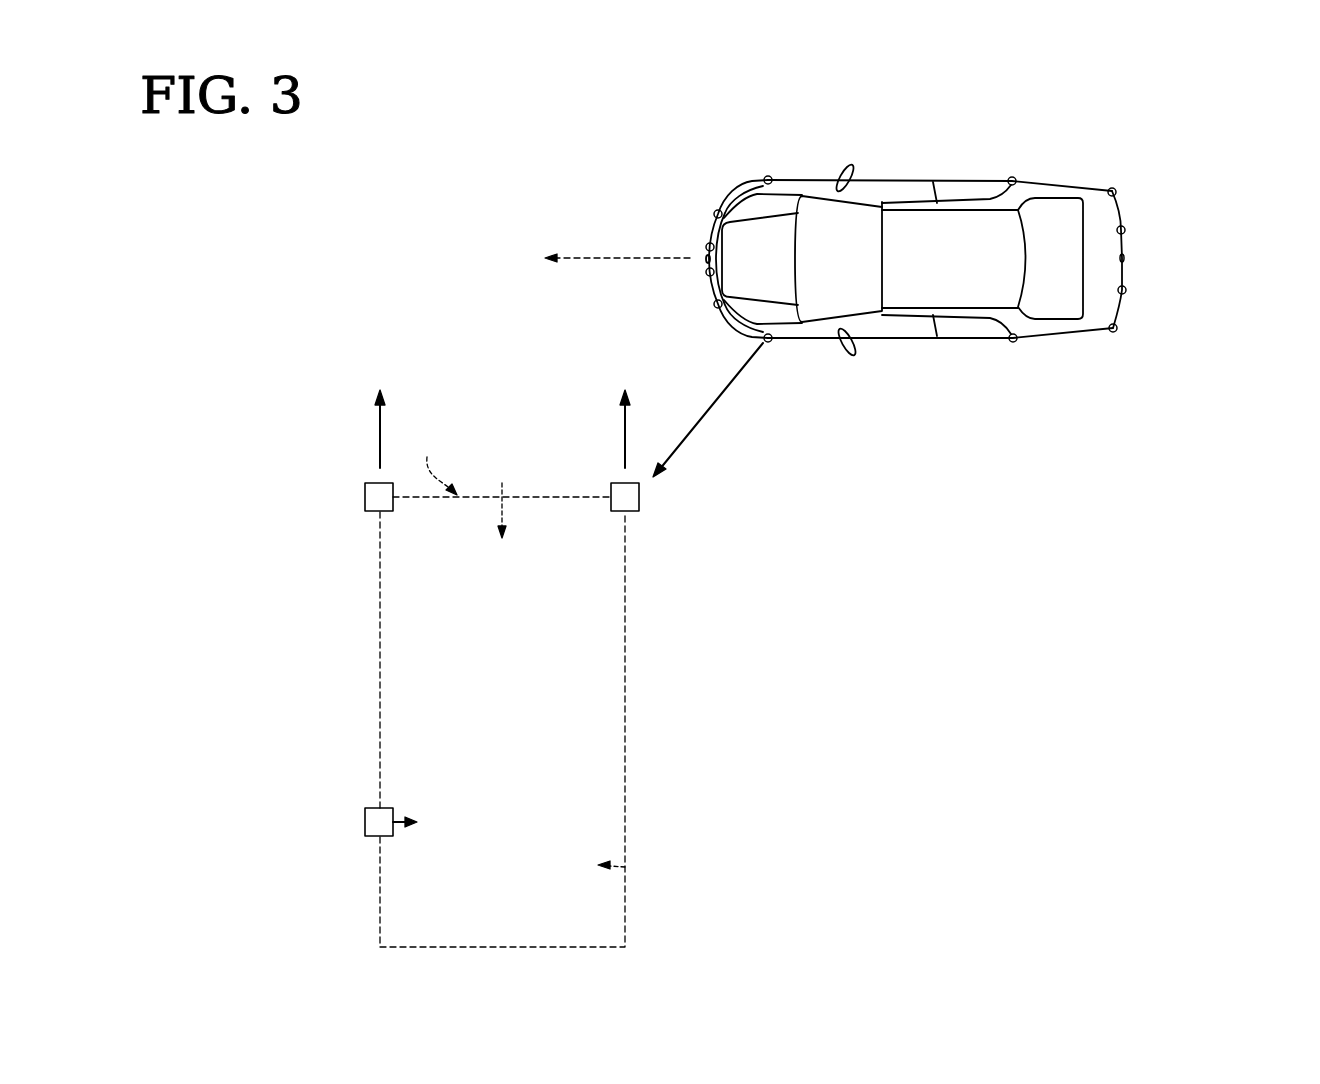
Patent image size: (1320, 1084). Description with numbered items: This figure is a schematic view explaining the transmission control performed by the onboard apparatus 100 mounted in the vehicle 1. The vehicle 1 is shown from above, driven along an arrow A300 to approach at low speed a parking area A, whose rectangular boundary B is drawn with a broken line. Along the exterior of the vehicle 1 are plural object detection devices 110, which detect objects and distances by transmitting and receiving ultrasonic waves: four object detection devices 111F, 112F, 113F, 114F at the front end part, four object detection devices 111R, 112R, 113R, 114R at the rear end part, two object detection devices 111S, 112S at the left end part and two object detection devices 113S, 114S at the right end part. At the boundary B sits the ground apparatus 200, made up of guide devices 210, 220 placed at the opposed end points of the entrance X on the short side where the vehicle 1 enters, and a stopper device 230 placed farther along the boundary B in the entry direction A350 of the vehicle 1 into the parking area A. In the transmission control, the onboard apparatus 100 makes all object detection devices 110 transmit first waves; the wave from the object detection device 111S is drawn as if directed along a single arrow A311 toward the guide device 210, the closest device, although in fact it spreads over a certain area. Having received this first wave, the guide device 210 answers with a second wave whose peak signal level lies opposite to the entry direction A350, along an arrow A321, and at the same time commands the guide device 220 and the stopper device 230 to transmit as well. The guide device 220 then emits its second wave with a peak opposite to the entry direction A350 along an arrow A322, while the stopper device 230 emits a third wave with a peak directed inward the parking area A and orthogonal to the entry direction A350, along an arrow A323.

The vehicle 1 is at (1100, 111).
The onboard apparatus 100 is at (873, 237).
The object detection devices 110 is at (873, 237).
The object detection device 111F is at (714, 304).
The object detection device 112F is at (708, 275).
The object detection device 113F is at (658, 172).
The object detection device 114F is at (713, 143).
The object detection device 111S is at (764, 341).
The object detection device 112S is at (1013, 342).
The object detection device 113S is at (793, 118).
The object detection device 114S is at (1012, 177).
The object detection device 111R is at (1117, 330).
The object detection device 112R is at (1126, 290).
The object detection device 113R is at (1125, 230).
The object detection device 114R is at (1116, 190).
The ground apparatus 200 is at (492, 668).
The guide device 210 is at (640, 503).
The guide device 220 is at (365, 497).
The stopper device 230 is at (365, 818).
The arrow A300 is at (593, 254).
The arrow A311 is at (723, 397).
The arrow A321 is at (625, 442).
The arrow A322 is at (380, 438).
The arrow A323 is at (398, 820).
The entry direction A350 is at (513, 513).
The entrance X is at (438, 463).
The parking area A is at (627, 868).
The boundary B is at (627, 793).